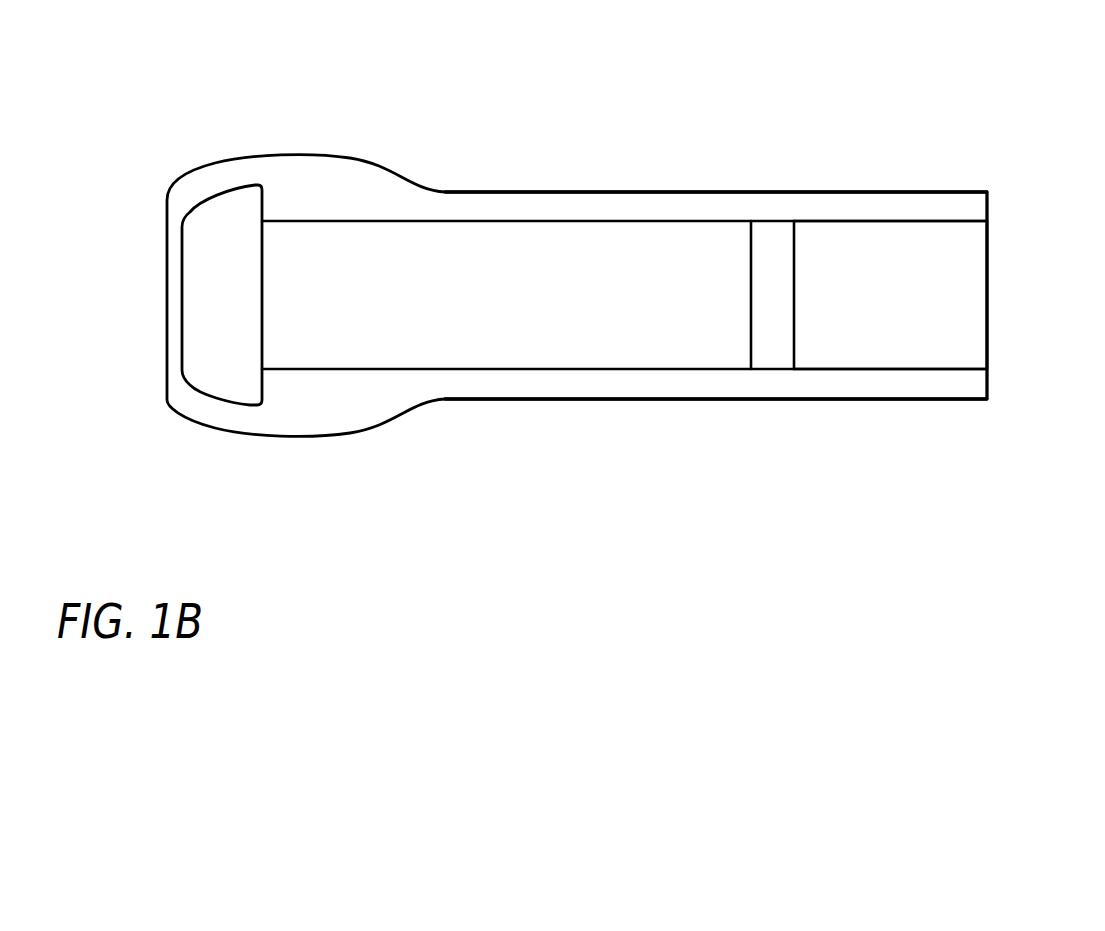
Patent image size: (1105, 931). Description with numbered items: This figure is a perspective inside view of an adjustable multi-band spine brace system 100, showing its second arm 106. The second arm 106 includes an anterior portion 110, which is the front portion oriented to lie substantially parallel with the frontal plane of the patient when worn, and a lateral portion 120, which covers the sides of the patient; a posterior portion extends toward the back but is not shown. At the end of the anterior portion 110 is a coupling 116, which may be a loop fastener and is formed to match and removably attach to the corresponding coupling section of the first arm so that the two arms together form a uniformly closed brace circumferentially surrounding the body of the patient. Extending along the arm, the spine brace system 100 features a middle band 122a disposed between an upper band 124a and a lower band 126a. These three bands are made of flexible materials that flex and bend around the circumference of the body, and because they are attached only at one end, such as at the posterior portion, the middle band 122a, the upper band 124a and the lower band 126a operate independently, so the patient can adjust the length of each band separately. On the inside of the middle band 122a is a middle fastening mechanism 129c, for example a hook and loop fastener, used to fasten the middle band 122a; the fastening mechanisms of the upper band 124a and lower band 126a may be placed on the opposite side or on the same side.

The adjustable multi-band spine brace system 100 is at (495, 112).
The anterior portion 110 is at (202, 150).
The coupling 116 is at (230, 367).
The second arm 106 is at (390, 435).
The lateral portion 120 is at (715, 425).
The upper band 124a is at (623, 208).
The lower band 126a is at (555, 383).
The middle fastening mechanism 129c is at (775, 292).
The middle band 122a is at (928, 292).